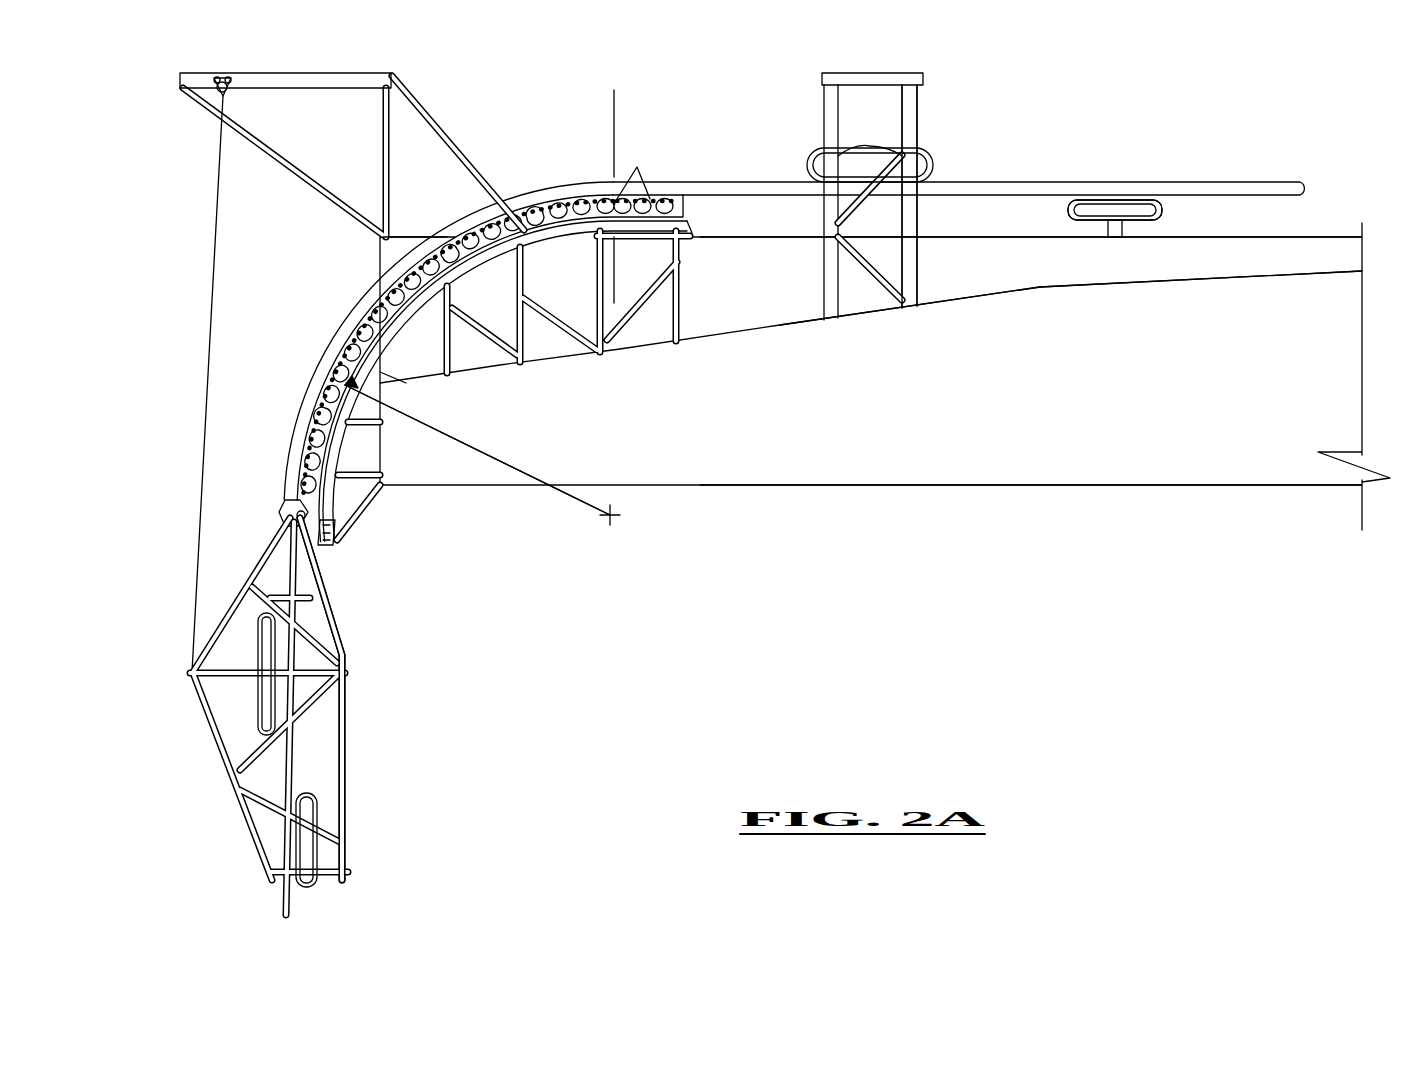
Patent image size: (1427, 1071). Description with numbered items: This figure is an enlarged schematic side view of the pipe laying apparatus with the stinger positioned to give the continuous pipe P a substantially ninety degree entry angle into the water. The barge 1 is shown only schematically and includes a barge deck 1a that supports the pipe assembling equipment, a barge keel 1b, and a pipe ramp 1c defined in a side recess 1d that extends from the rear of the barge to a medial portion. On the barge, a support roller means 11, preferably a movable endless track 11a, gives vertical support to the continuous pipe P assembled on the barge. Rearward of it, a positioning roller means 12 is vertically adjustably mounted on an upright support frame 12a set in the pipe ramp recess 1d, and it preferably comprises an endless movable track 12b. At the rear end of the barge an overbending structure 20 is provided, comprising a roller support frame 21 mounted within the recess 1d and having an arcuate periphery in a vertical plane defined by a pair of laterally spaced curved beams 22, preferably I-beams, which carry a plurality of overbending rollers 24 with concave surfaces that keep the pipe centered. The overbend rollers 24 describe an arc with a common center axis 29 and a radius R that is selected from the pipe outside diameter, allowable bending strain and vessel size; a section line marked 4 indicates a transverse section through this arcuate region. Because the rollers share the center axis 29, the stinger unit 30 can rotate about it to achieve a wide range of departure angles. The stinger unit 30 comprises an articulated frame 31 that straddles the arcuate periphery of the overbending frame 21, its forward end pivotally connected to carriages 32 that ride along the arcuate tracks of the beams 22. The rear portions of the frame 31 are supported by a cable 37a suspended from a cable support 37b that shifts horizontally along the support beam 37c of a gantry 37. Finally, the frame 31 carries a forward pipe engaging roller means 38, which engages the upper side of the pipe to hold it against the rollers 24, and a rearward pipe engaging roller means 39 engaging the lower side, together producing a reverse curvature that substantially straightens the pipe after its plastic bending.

The barge 1 is at (927, 420).
The barge deck 1a is at (1337, 237).
The barge keel 1b is at (998, 488).
The pipe ramp 1c is at (1040, 290).
The side recess 1d is at (1160, 266).
The continuous pipe P is at (1223, 183).
The support roller means 11 is at (1133, 200).
The movable endless track 11a is at (1164, 210).
The positioning roller means 12 is at (907, 196).
The upright support frame 12a is at (918, 101).
The endless movable track 12b is at (934, 160).
The overbending structure 20 is at (483, 327).
The roller support frame 21 is at (552, 301).
The curved beams 22 is at (472, 267).
The overbending rollers 24 is at (633, 169).
The section line 4 is at (610, 93).
The common center axis 29 is at (482, 466).
The radius R is at (477, 450).
The stinger unit 30 is at (371, 720).
The articulated frame 31 is at (335, 618).
The carriages 32 is at (318, 545).
The gantry 37 is at (417, 74).
The cable 37a is at (215, 272).
The cable support 37b is at (222, 77).
The support beam 37c is at (285, 78).
The forward pipe engaging roller means 38 is at (251, 628).
The rearward pipe engaging roller means 39 is at (318, 806).